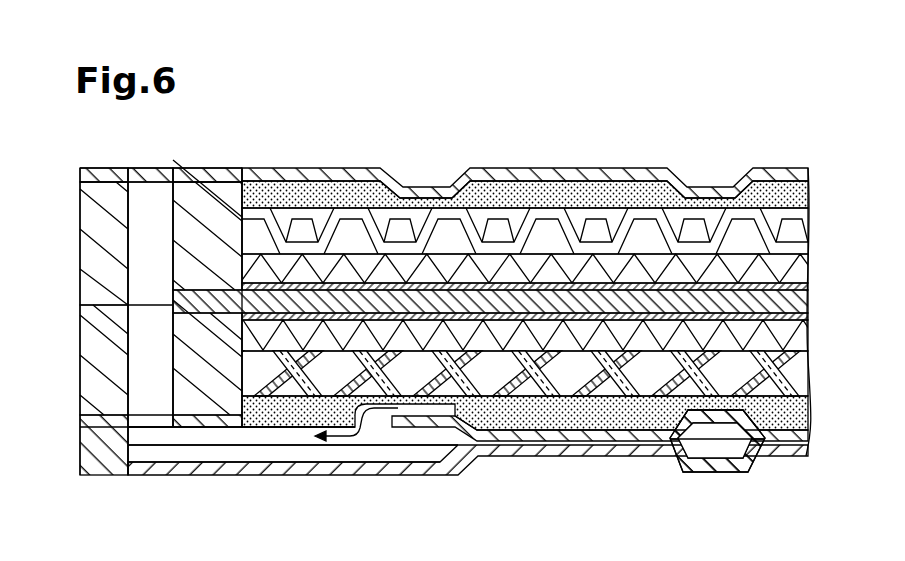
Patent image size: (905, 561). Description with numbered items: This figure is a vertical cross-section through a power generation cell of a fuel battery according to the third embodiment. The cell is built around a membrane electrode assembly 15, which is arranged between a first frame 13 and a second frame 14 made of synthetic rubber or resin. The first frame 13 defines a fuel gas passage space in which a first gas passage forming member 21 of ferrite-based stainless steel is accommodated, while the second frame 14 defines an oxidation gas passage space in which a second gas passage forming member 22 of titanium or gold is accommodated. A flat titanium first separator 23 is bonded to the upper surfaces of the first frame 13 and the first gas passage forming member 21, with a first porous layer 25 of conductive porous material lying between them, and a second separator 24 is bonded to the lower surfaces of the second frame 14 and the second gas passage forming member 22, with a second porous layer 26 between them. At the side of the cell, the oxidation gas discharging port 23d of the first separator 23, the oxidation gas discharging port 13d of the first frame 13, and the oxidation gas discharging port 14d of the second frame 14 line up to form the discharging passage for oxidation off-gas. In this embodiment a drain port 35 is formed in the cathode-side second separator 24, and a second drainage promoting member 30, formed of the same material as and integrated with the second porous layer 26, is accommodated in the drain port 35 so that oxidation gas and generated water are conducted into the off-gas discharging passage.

The first frame 13 is at (90, 199).
The oxidation gas discharging port 13d is at (131, 177).
The second frame 14 is at (90, 377).
The oxidation gas discharging port 14d is at (131, 386).
The membrane electrode assembly 15 is at (545, 278).
The first gas passage forming member 21 is at (387, 217).
The second gas passage forming member 22 is at (530, 377).
The first separator 23 is at (523, 170).
The oxidation gas discharging port 23d is at (166, 177).
The second separator 24 is at (405, 420).
The first porous layer 25 is at (275, 190).
The second porous layer 26 is at (560, 410).
The second drainage promoting member 30 is at (293, 415).
The drain port 35 is at (255, 428).